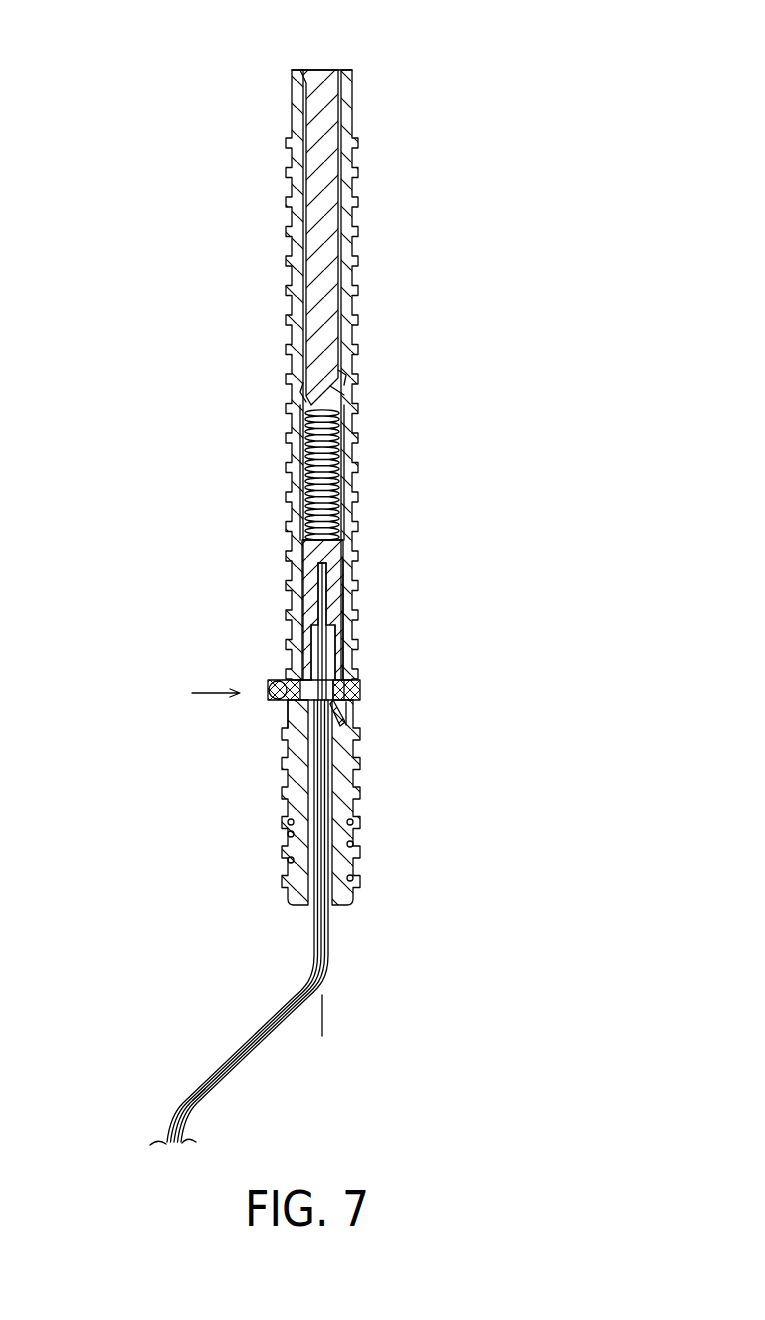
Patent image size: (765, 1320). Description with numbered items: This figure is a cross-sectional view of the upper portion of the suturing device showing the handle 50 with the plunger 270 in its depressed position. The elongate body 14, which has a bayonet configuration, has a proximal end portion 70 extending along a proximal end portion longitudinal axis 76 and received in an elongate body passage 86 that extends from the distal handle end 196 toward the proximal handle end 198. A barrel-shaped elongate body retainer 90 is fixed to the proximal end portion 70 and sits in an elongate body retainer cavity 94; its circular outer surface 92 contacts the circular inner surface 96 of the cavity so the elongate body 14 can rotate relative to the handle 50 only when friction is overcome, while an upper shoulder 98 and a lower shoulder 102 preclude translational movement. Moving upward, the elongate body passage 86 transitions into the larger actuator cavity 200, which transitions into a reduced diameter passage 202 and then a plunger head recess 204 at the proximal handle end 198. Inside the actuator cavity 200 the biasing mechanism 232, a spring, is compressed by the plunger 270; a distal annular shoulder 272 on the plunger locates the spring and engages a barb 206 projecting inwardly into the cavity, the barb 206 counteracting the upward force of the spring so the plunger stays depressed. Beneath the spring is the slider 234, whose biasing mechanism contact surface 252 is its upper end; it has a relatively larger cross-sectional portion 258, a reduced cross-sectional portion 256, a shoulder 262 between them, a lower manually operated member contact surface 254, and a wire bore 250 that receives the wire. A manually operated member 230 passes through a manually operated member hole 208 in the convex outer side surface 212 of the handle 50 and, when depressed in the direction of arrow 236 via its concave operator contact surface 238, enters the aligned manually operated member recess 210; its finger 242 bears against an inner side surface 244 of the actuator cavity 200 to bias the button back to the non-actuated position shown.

The proximal handle end 198 is at (298, 70).
The plunger head recess 204 is at (352, 75).
The reduced diameter passage 202 is at (345, 153).
The plunger 270 is at (335, 210).
The barbs 206 is at (346, 375).
The distal annular shoulder 272 is at (345, 392).
The actuator cavity 200 is at (345, 428).
The biasing mechanism (spring) 232 is at (350, 462).
The handle 50 is at (357, 500).
The outer side surface 212 is at (359, 532).
The biasing mechanism contact surface 252 is at (312, 530).
The relatively larger cross-sectional portion 258 is at (330, 553).
The wire bore 250 is at (326, 612).
The slider 234 is at (337, 617).
The shoulder 262 is at (302, 632).
The reduced cross-sectional portion 256 is at (336, 642).
The manually operated member hole 208 is at (290, 681).
The manually operated member contact surface 254 is at (340, 678).
The manually operated member recess 210 is at (348, 690).
The operator contact surface 238 is at (270, 700).
The inner side surface 244 is at (350, 706).
The finger 242 is at (350, 717).
The manually operated member 230 is at (290, 706).
The elongate body passage 86 is at (351, 735).
The proximal end portion 70 is at (341, 770).
The upper shoulder 98 is at (290, 826).
The elongate body retainer cavity 94 is at (290, 834).
The outer surface 92 is at (352, 827).
The elongate body retainer 90 is at (352, 842).
The lower shoulder 102 is at (290, 860).
The inner surface 96 is at (342, 878).
The distal handle end 196 is at (295, 918).
The elongate body 14 is at (233, 1048).
The proximal end portion longitudinal axis 76 is at (326, 1012).
The arrow 236 is at (192, 693).